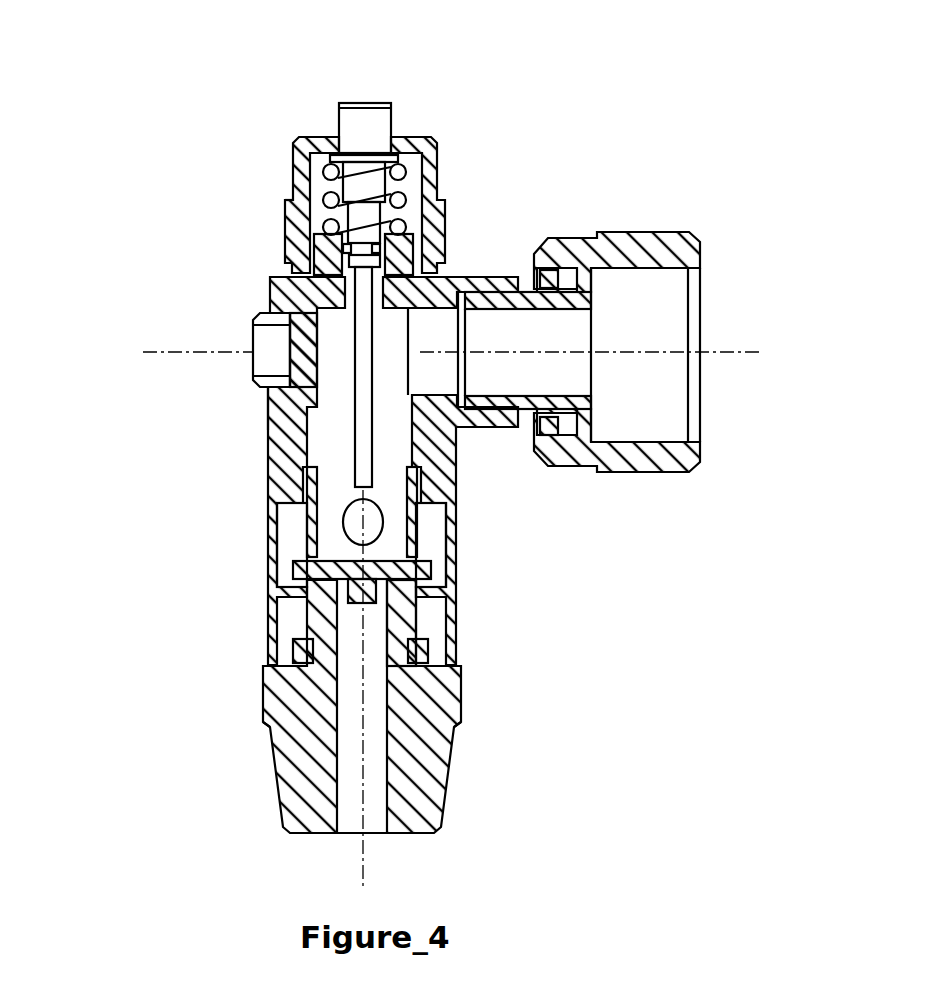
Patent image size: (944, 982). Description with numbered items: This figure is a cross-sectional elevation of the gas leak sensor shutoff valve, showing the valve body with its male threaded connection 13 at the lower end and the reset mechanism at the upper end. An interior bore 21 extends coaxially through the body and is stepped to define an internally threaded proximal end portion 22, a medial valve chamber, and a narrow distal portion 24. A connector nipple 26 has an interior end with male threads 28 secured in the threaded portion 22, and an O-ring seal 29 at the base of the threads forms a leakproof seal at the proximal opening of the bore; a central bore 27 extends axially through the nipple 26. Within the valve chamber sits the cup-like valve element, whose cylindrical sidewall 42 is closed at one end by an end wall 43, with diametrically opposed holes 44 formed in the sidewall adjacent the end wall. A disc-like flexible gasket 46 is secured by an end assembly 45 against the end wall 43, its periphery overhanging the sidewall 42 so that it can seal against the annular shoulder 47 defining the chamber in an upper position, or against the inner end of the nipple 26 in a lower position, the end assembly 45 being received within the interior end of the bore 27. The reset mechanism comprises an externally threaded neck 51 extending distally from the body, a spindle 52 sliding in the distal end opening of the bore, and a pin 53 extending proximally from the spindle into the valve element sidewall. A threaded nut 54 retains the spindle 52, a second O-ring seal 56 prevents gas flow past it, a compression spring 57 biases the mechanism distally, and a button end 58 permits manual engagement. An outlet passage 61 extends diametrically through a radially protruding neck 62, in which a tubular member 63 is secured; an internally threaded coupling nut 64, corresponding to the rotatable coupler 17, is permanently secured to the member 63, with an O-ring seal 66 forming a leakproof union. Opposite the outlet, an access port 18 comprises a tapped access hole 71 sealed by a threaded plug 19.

The male threaded connection 13 is at (262, 772).
The rotatable coupler 17 is at (660, 207).
The access port 18 is at (232, 367).
The threaded plug 19 is at (253, 377).
The interior bore 21 is at (290, 520).
The internally threaded proximal end portion 22 is at (275, 620).
The narrow distal portion 24 is at (296, 277).
The connector nipple 26 is at (422, 750).
The central bore 27 is at (370, 788).
The male threads 28 is at (425, 587).
The O-ring seal 29 is at (428, 655).
The cylindrical sidewall 42 is at (300, 532).
The end wall 43 is at (418, 550).
The holes 44 is at (385, 528).
The end assembly 45 is at (418, 630).
The flexible gasket 46 is at (297, 568).
The annular shoulder 47 is at (383, 550).
The externally threaded neck 51 is at (285, 233).
The spindle 52 is at (292, 153).
The pin 53 is at (355, 310).
The threaded nut 54 is at (357, 183).
The second O-ring seal 56 is at (417, 217).
The compression spring 57 is at (397, 163).
The button end 58 is at (350, 100).
The outlet passage 61 is at (492, 333).
The neck 62 is at (493, 427).
The tubular member 63 is at (593, 290).
The coupling nut 64 is at (692, 472).
The O-ring seal 66 is at (550, 417).
The tapped access hole 71 is at (277, 413).